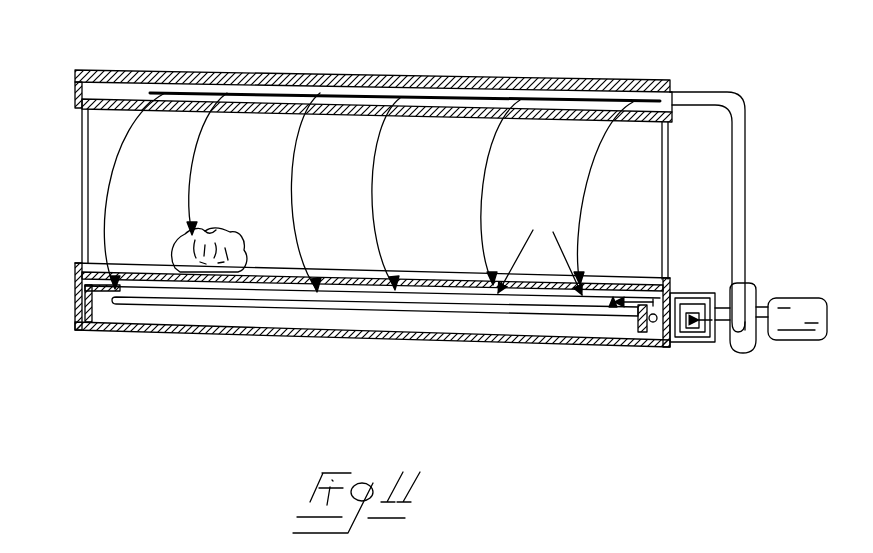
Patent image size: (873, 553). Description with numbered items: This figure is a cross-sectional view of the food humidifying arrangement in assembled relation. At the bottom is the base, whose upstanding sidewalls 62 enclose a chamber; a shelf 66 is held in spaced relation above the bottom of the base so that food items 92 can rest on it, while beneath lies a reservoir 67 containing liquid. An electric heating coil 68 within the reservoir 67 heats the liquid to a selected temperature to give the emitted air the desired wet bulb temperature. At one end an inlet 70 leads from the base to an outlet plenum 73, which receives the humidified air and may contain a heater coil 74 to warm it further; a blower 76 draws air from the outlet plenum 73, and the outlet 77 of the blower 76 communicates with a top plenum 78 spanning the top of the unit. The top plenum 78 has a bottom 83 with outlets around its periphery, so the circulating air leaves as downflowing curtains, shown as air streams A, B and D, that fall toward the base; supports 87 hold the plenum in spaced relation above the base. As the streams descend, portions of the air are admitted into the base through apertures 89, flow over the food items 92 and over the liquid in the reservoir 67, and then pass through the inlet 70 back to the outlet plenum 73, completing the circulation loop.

The sidewalls 62 is at (112, 332).
The shelf 66 is at (145, 271).
The reservoir 67 is at (90, 297).
The electric heating coil 68 is at (338, 310).
The inlet 70 is at (703, 292).
The outlet plenum 73 is at (663, 331).
The heater coil 74 is at (700, 334).
The blower 76 is at (755, 305).
The outlet of blower 77 is at (746, 143).
The top plenum 78 is at (670, 92).
The bottom of top plenum 83 is at (482, 92).
The supports 87 is at (686, 200).
The apertures 89 is at (540, 253).
The food items 92 is at (237, 250).
The downflowing air stream A is at (483, 158).
The downflowing air stream B is at (110, 152).
The downflowing air stream D is at (587, 187).